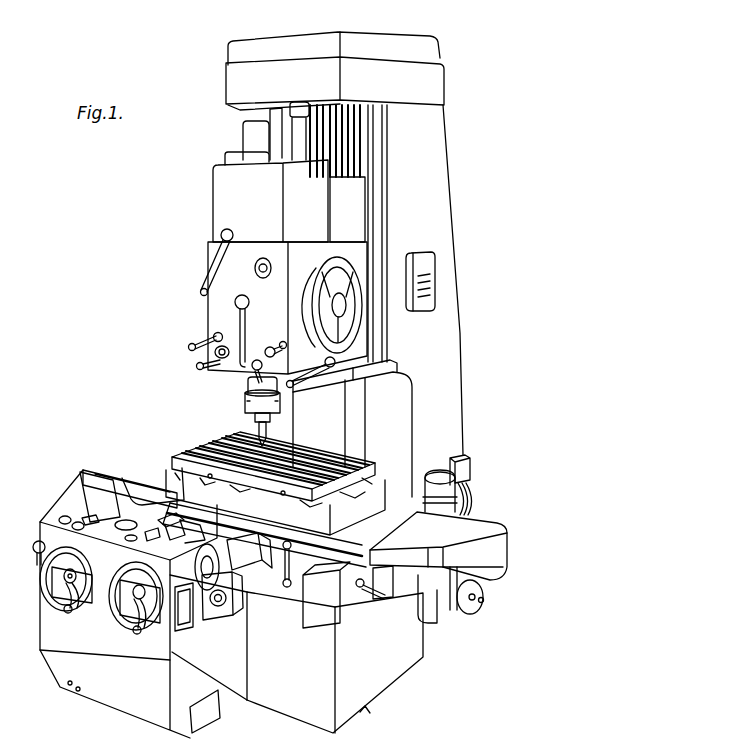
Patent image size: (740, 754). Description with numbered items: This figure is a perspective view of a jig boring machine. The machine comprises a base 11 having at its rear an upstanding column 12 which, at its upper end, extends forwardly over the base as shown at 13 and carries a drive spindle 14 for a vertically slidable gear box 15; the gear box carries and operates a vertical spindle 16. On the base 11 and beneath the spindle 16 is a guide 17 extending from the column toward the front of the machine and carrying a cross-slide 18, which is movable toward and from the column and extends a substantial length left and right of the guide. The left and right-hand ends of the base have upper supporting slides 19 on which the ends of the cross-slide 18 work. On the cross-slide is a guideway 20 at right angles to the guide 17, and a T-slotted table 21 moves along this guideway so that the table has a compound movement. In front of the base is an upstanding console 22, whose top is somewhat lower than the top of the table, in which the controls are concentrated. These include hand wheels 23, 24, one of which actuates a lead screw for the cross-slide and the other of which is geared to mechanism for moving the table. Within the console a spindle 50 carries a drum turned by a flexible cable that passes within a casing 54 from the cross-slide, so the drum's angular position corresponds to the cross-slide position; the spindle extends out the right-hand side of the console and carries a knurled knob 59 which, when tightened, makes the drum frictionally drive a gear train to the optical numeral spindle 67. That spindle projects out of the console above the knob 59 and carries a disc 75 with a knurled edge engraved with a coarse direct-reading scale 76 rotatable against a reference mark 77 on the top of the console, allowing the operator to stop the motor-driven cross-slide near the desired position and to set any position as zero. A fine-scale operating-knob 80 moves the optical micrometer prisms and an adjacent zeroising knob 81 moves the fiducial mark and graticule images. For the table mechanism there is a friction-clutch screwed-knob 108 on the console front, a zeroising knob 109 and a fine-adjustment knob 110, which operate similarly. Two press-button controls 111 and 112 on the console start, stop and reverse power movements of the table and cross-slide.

The base 11 is at (383, 683).
The column 12 is at (443, 352).
The forwardly extending upper end of column 13 is at (357, 46).
The drive spindle 14 is at (297, 141).
The gear box 15 is at (222, 214).
The vertical spindle 16 is at (248, 384).
The guide 17 is at (250, 592).
The cross-slide 18 is at (315, 565).
The upper supporting slides 19 is at (357, 608).
The guideway 20 is at (437, 565).
The T-slotted table 21 is at (380, 457).
The console 22 is at (123, 637).
The hand wheel 23 is at (152, 638).
The hand wheel 24 is at (85, 609).
The spindle 50 is at (225, 606).
The casing 54 is at (230, 580).
The knurled knob 59 is at (220, 608).
The optical numeral spindle 67 is at (205, 590).
The disc 75 is at (180, 595).
The coarse direct-reading scale 76 is at (205, 545).
The reference mark 77 is at (198, 545).
The fine-scale operating-knob 80 is at (164, 530).
The zeroising knob 81 is at (153, 537).
The friction-clutch screwed-knob 108 is at (40, 542).
The zeroising knob 109 is at (66, 516).
The fine-adjustment knob 110 is at (86, 478).
The press-button control 111 is at (107, 628).
The press-button control 112 is at (128, 537).